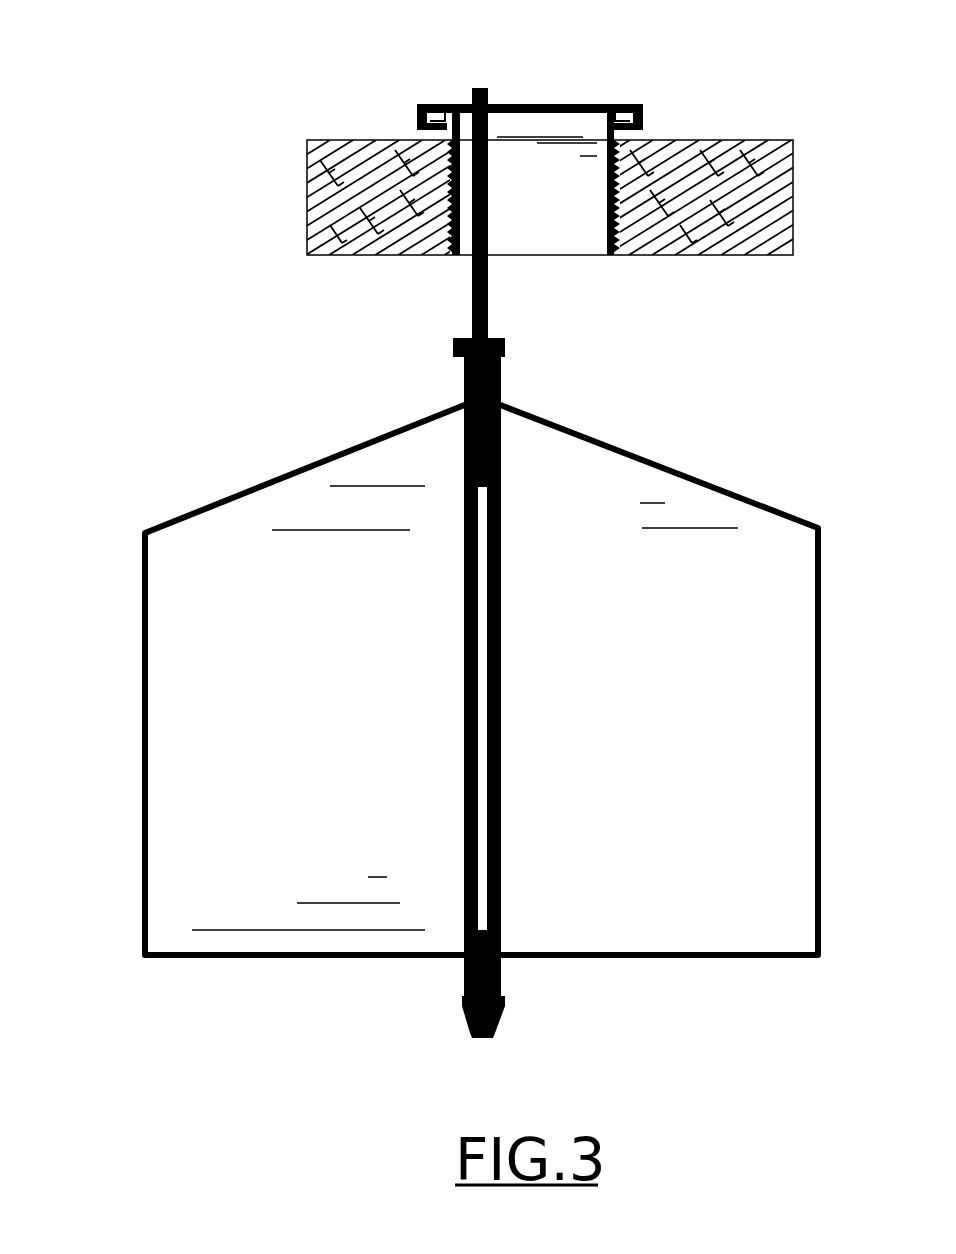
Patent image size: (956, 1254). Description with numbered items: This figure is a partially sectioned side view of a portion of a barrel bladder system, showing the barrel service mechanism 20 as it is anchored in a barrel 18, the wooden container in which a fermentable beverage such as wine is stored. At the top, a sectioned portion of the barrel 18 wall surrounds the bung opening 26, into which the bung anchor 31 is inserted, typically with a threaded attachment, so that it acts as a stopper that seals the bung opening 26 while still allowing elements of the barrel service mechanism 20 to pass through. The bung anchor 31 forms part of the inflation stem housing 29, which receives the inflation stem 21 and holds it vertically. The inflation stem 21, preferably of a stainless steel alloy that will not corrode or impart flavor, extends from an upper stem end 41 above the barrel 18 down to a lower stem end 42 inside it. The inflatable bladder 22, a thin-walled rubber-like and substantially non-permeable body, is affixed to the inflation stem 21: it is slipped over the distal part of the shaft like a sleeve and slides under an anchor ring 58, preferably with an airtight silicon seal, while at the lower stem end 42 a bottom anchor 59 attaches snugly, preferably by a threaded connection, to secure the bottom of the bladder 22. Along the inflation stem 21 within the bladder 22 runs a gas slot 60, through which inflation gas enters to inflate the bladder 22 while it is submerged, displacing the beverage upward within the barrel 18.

The barrel 18 is at (323, 140).
The barrel service mechanism 20 is at (303, 368).
The inflation stem 21 is at (472, 300).
The inflatable bladder 22 is at (290, 510).
The bung opening 26 is at (618, 250).
The inflation stem housing 29 is at (577, 108).
The bung anchor 31 is at (420, 102).
The upper stem end 41 is at (472, 90).
The lower stem end 42 is at (502, 980).
The anchor ring 58 is at (508, 348).
The bottom anchor 59 is at (468, 1023).
The gas slot 60 is at (482, 730).